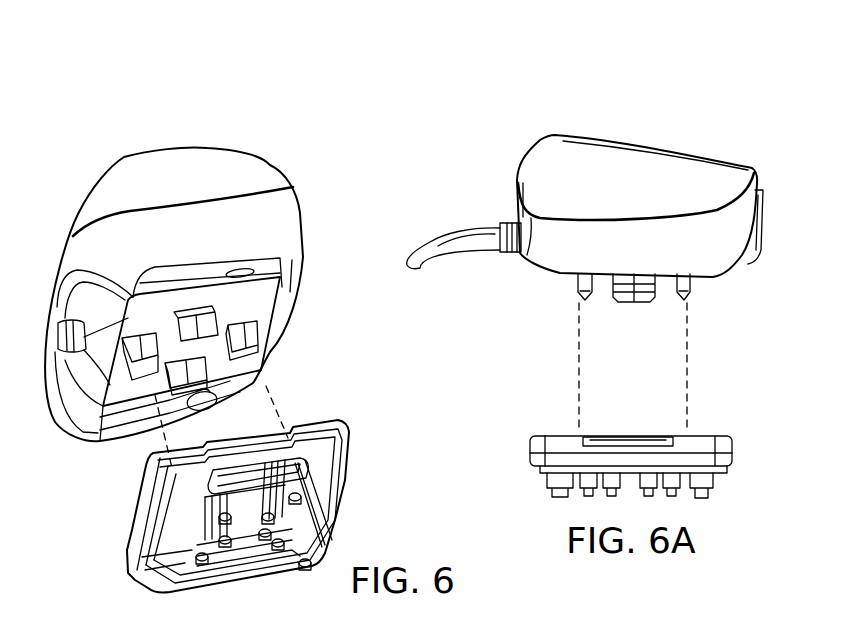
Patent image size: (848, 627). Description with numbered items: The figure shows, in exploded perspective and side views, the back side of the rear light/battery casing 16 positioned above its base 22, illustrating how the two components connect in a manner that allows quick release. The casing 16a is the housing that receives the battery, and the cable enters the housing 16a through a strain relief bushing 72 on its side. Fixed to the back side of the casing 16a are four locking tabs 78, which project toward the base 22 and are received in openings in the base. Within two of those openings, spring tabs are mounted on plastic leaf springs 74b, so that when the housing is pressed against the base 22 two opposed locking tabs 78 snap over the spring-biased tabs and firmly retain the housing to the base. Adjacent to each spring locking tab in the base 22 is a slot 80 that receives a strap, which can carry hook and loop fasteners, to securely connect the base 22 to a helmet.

In FIG. 6A, the rear light/battery casing 16 is at (527, 78).
In FIG. 6, the casing 16a is at (267, 163).
In FIG. 6A, the casing 16a is at (633, 127).
In FIG. 6, the base 22 is at (228, 504).
In FIG. 6A, the base 22 is at (732, 452).
In FIG. 6A, the strain relief bushing 72 is at (513, 220).
In FIG. 6, the locking tabs 78 is at (220, 317).
In FIG. 6A, the locking tabs 78 is at (573, 287).
In FIG. 6, the plastic leaf springs 74b is at (317, 507).
In FIG. 6, the slot 80 is at (327, 517).